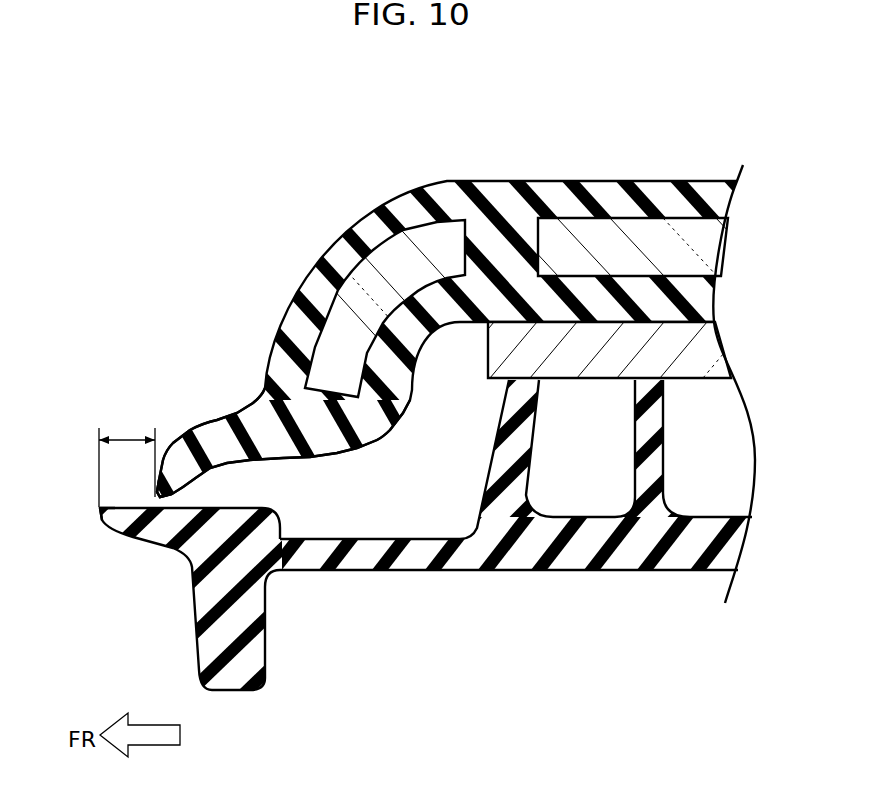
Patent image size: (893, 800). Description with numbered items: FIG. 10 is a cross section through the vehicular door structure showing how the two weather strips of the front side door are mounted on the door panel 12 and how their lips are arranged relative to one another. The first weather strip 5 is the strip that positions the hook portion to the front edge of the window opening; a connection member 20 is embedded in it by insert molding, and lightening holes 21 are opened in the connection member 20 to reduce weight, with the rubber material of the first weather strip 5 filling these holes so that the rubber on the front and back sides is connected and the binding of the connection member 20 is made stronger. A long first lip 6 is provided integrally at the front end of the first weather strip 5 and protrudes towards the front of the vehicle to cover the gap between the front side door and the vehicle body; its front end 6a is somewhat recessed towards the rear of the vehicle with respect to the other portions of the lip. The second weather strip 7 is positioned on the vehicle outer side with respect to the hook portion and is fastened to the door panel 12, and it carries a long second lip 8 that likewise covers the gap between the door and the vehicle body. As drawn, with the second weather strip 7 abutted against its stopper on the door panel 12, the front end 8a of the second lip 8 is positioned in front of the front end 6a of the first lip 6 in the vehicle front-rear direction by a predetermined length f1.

The first weather strip 5 is at (585, 177).
The lightening holes 21 is at (537, 226).
The connection member 20 is at (697, 250).
The door panel 12 is at (688, 380).
The first lip 6 is at (235, 430).
The front end 6a is at (154, 495).
The second weather strip 7 is at (565, 576).
The second lip 8 is at (150, 545).
The front end 8a is at (98, 518).
The predetermined length f1 is at (127, 458).